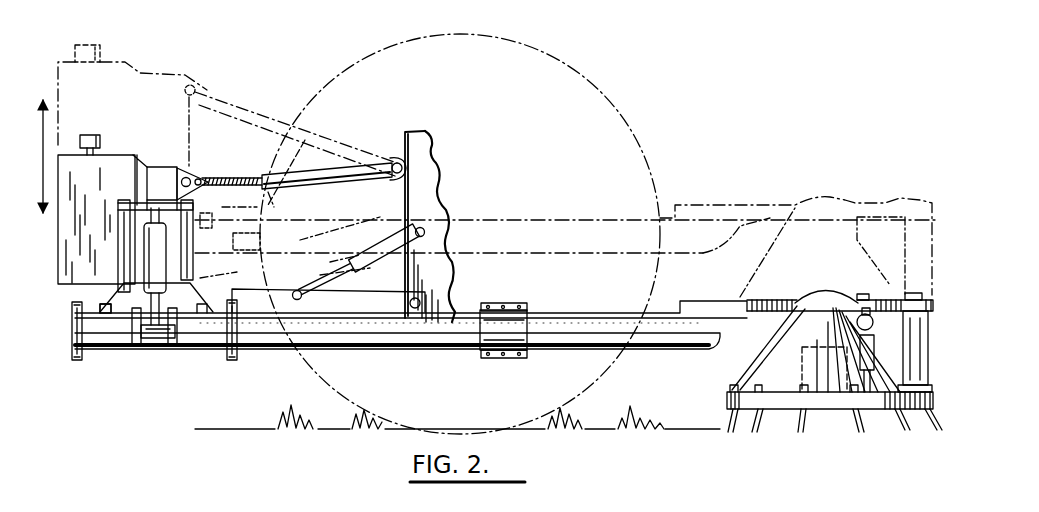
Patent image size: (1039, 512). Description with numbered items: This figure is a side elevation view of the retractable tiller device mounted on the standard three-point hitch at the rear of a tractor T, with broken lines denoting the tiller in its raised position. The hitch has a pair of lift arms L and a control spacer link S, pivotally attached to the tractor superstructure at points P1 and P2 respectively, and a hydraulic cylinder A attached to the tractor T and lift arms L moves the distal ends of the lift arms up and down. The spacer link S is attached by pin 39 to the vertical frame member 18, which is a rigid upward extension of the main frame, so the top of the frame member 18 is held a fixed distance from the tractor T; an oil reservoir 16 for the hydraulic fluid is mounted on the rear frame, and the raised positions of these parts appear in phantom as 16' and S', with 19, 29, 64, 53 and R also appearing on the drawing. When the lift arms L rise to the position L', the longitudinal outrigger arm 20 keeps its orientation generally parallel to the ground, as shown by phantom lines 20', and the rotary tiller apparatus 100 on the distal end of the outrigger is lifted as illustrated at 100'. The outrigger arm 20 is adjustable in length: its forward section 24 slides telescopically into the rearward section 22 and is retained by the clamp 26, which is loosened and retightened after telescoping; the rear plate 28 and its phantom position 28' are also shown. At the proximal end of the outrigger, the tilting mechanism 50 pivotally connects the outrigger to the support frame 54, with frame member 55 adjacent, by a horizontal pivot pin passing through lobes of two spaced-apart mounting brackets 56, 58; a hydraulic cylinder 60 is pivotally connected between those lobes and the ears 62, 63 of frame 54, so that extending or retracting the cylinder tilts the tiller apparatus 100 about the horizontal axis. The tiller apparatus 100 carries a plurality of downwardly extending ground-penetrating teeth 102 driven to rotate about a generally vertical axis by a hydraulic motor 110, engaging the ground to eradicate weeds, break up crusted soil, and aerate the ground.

The frame in raised phantom position 16' is at (132, 99).
The vertical adjustment range arrow 29 is at (47, 131).
The oil reservoir 16 is at (111, 191).
The adjustment knob 64 is at (121, 207).
The vertical frame member 18 is at (148, 166).
The pin 39 is at (188, 177).
The pivot pin 19 is at (200, 178).
The control spacer link S is at (323, 164).
The strut arm in phantom position S' is at (296, 143).
The spacer link attachment point P2 is at (401, 157).
The lift arm attachment point P1 is at (430, 303).
The tractor T is at (446, 160).
The radius of swing R is at (622, 123).
The hydraulic cylinder A is at (371, 257).
The raised lift arm position L' is at (252, 220).
The lift arm L is at (290, 251).
The raised outrigger arm position 20' is at (565, 219).
The longitudinal outrigger arm 20 is at (450, 364).
The rearward section 22 is at (384, 349).
The forward section 24 is at (584, 311).
The clamp 26 is at (510, 303).
The rear plate 28 is at (840, 288).
The rear plate in phantom position 28' is at (796, 225).
The tilting mechanism 50 is at (158, 353).
The right guide post 53 is at (192, 215).
The frame member 55 is at (120, 236).
The support frame 54 is at (103, 313).
The mounting bracket 56 is at (73, 358).
The mounting bracket 58 is at (235, 359).
The hydraulic cylinder 60 is at (128, 265).
The ear 62 is at (181, 348).
The ear 63 is at (129, 348).
The rotary tiller apparatus 100 is at (807, 349).
The raised tiller apparatus position 100' is at (736, 252).
The ground-penetrating teeth 102 is at (801, 410).
The hydraulic motor 110 is at (802, 349).